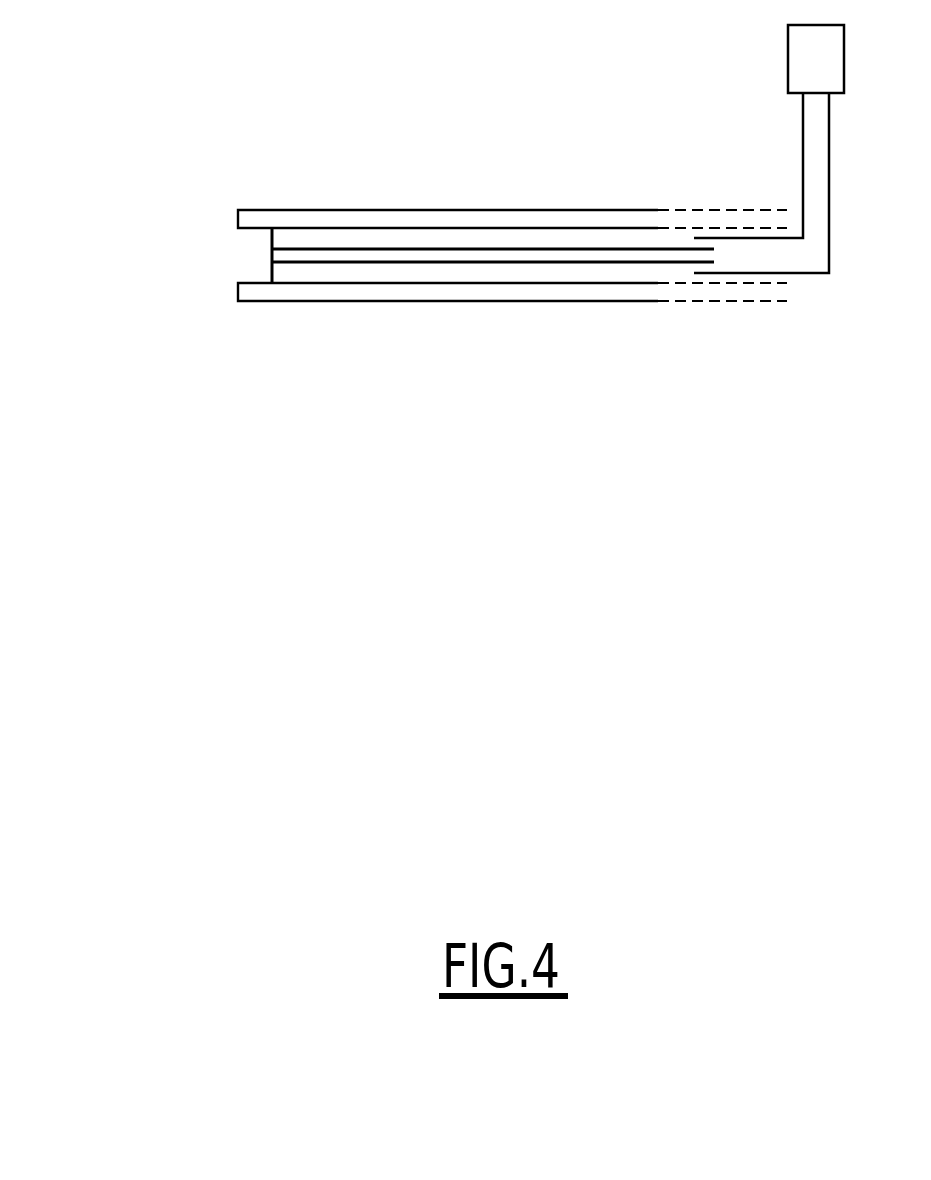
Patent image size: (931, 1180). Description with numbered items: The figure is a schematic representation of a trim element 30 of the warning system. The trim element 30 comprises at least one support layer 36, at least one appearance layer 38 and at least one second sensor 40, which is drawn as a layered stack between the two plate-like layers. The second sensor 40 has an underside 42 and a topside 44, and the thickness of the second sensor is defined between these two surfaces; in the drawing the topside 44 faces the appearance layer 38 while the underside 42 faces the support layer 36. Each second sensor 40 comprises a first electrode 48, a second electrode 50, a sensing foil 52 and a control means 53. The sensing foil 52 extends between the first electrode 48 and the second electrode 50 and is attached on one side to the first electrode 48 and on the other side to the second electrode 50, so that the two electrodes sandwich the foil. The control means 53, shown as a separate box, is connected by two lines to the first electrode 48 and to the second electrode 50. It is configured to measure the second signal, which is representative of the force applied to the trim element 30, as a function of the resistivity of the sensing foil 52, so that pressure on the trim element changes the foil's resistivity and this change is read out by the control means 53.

The trim element 30 is at (677, 333).
The support layer 36 is at (258, 294).
The appearance layer 38 is at (276, 216).
The second sensor 40 is at (178, 235).
The underside 42 is at (517, 283).
The topside 44 is at (537, 228).
The first electrode 48 is at (290, 272).
The second electrode 50 is at (300, 238).
The sensing foil 52 is at (272, 258).
The control means 53 is at (798, 68).